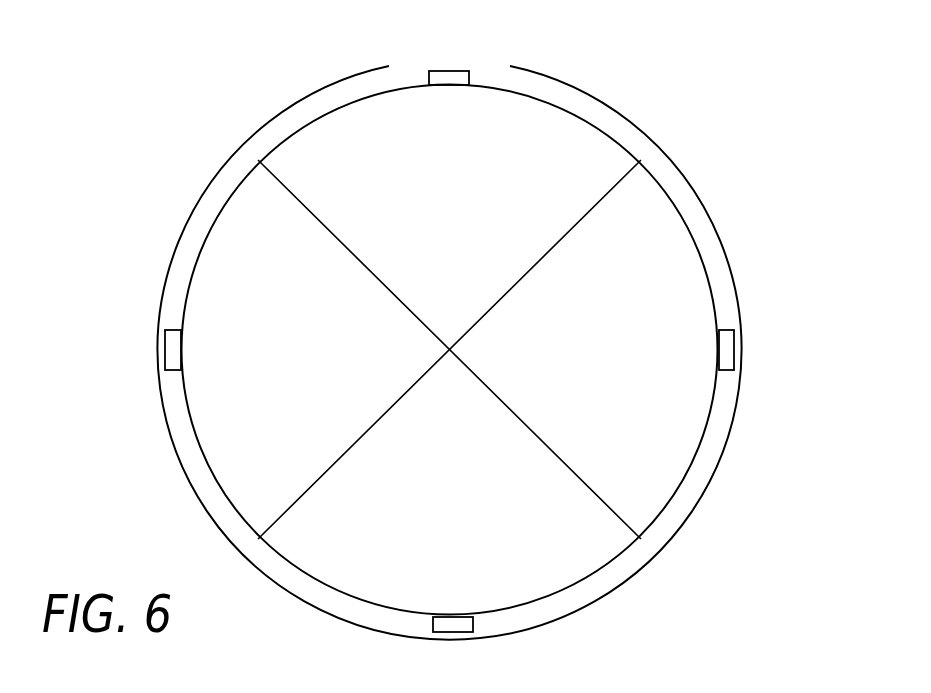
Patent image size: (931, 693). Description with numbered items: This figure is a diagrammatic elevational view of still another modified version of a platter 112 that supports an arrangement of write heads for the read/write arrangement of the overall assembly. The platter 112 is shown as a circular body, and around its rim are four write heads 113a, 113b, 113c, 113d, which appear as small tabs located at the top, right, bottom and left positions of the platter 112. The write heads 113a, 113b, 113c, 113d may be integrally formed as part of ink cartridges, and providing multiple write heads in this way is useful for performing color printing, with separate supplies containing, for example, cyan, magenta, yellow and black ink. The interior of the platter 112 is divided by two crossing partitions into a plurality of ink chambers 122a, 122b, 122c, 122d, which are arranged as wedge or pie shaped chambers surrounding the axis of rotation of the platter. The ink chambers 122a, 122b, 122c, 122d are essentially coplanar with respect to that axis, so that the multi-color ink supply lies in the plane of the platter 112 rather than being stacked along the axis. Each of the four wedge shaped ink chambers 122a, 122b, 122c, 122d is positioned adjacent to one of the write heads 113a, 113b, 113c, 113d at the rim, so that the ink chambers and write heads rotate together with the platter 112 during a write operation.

The platter 112 is at (590, 122).
The write head 113a is at (441, 71).
The write head 113b is at (734, 355).
The write head 113c is at (462, 632).
The write head 113d is at (165, 356).
The ink chamber 122a is at (490, 192).
The ink chamber 122b is at (627, 358).
The ink chamber 122c is at (495, 527).
The ink chamber 122d is at (332, 359).